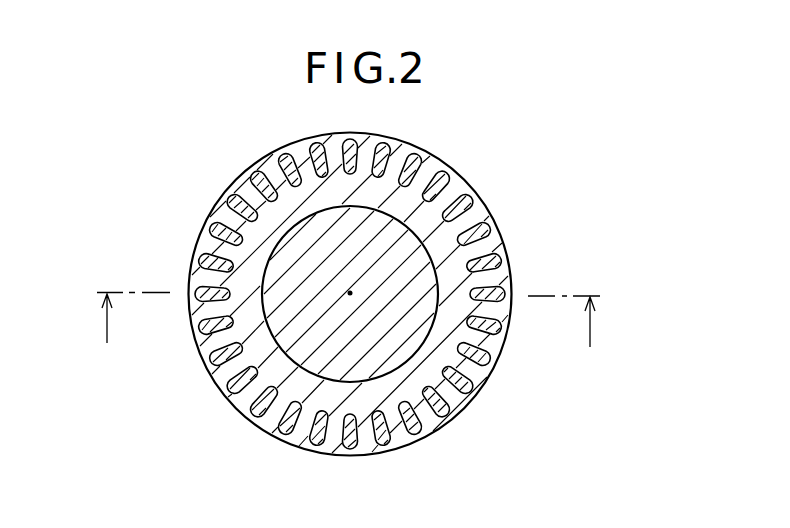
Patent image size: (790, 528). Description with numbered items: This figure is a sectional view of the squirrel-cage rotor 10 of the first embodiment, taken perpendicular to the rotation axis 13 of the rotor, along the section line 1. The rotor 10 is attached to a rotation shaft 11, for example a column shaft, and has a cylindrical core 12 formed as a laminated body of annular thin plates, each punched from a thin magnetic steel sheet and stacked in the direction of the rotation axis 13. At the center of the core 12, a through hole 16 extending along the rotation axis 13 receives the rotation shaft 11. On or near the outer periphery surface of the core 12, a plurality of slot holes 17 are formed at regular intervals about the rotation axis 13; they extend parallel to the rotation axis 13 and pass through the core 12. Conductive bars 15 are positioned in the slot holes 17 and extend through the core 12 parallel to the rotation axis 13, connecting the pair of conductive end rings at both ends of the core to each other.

The section line 1 is at (349, 335).
The squirrel-cage rotor 10 is at (546, 172).
The rotation shaft 11 is at (436, 283).
The cylindrical core 12 is at (510, 287).
The rotation axis 13 is at (350, 293).
The conductive bars 15 is at (202, 238).
The through hole 16 is at (438, 325).
The slot holes 17 is at (228, 192).